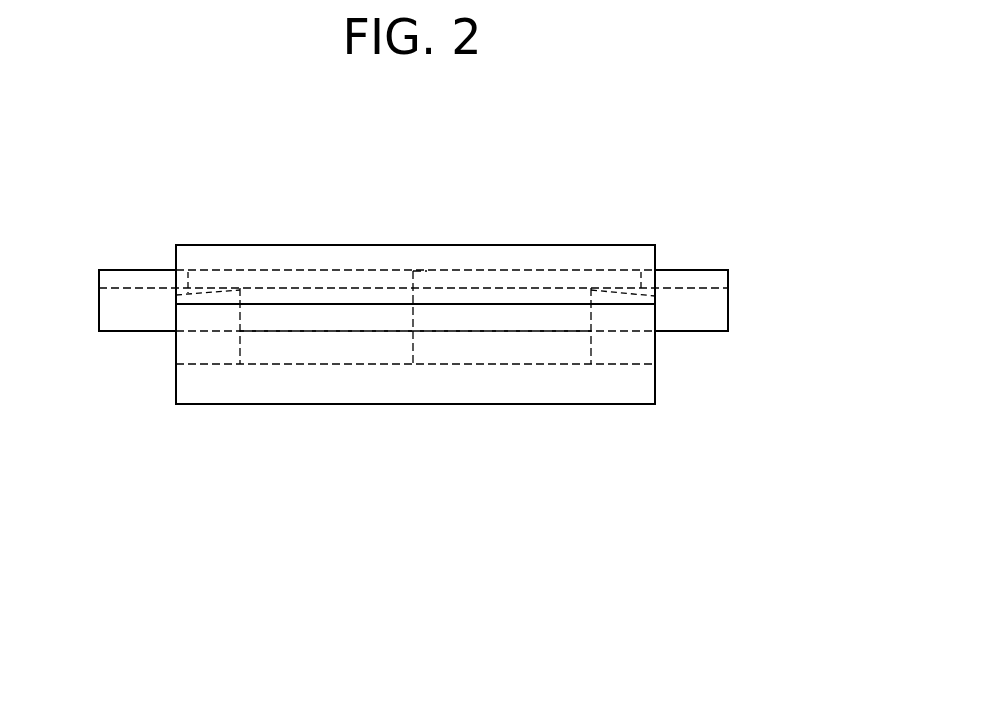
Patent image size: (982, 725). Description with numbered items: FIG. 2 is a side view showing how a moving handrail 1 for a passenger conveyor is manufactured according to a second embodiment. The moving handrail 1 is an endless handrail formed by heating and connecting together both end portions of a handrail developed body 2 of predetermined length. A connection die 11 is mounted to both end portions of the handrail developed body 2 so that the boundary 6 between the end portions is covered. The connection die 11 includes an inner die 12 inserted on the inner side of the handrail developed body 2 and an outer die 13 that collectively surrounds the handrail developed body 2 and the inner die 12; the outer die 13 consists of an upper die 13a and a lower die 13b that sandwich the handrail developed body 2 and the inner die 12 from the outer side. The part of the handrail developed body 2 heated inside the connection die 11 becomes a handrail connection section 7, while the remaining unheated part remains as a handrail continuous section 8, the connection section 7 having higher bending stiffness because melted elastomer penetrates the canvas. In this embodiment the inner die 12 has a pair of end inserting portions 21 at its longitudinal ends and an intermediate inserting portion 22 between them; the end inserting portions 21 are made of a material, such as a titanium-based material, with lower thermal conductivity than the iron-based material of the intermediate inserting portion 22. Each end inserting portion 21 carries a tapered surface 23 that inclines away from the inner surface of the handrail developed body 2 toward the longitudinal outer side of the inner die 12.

The moving handrail 1 is at (754, 252).
The handrail developed body 2 is at (133, 330).
The boundary 6 is at (427, 269).
The handrail connection section 7 is at (333, 269).
The handrail continuous section 8 is at (133, 269).
The connection die 11 is at (603, 243).
The inner die 12 is at (452, 363).
The outer die 13 is at (567, 404).
The upper die 13a is at (530, 258).
The lower die 13b is at (512, 390).
The end inserting portion 21 is at (207, 352).
The intermediate inserting portion 22 is at (388, 350).
The tapered surface 23 is at (188, 271).